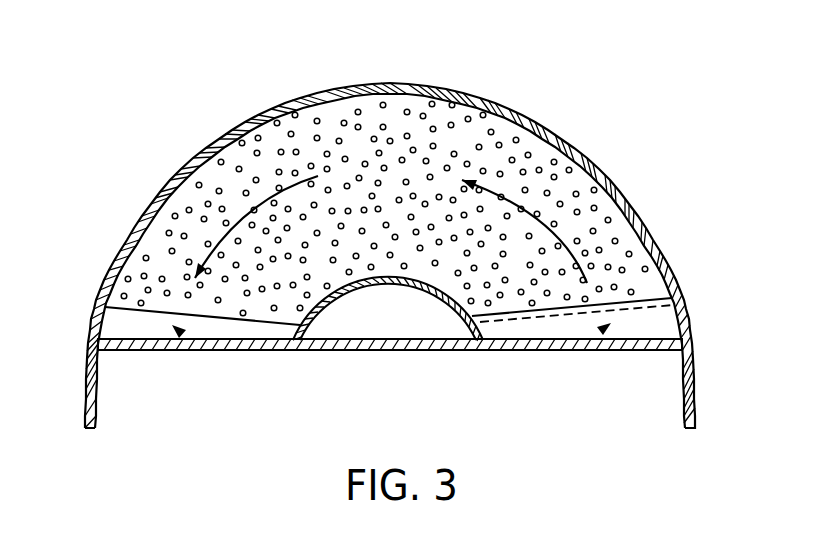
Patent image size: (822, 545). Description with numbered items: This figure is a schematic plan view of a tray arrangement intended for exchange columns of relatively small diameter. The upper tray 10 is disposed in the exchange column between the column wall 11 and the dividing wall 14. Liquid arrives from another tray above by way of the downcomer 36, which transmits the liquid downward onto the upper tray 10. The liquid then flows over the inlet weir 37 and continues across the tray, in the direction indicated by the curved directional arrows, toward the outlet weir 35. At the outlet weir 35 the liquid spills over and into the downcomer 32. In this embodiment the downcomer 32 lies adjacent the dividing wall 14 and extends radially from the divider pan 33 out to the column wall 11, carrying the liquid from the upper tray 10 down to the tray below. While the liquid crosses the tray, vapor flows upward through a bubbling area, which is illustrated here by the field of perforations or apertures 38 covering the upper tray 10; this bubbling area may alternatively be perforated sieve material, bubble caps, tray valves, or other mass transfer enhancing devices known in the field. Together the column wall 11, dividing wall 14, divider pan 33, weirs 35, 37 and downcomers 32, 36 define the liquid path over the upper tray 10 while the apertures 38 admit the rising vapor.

The upper tray 10 is at (636, 111).
The column wall 11 is at (232, 130).
The dividing wall 14 is at (138, 352).
The downcomer 32 is at (176, 328).
The divider pan 33 is at (392, 280).
The outlet weir 35 is at (152, 305).
The downcomer 36 is at (604, 327).
The inlet weir 37 is at (595, 300).
The perforations or apertures 38 is at (614, 238).